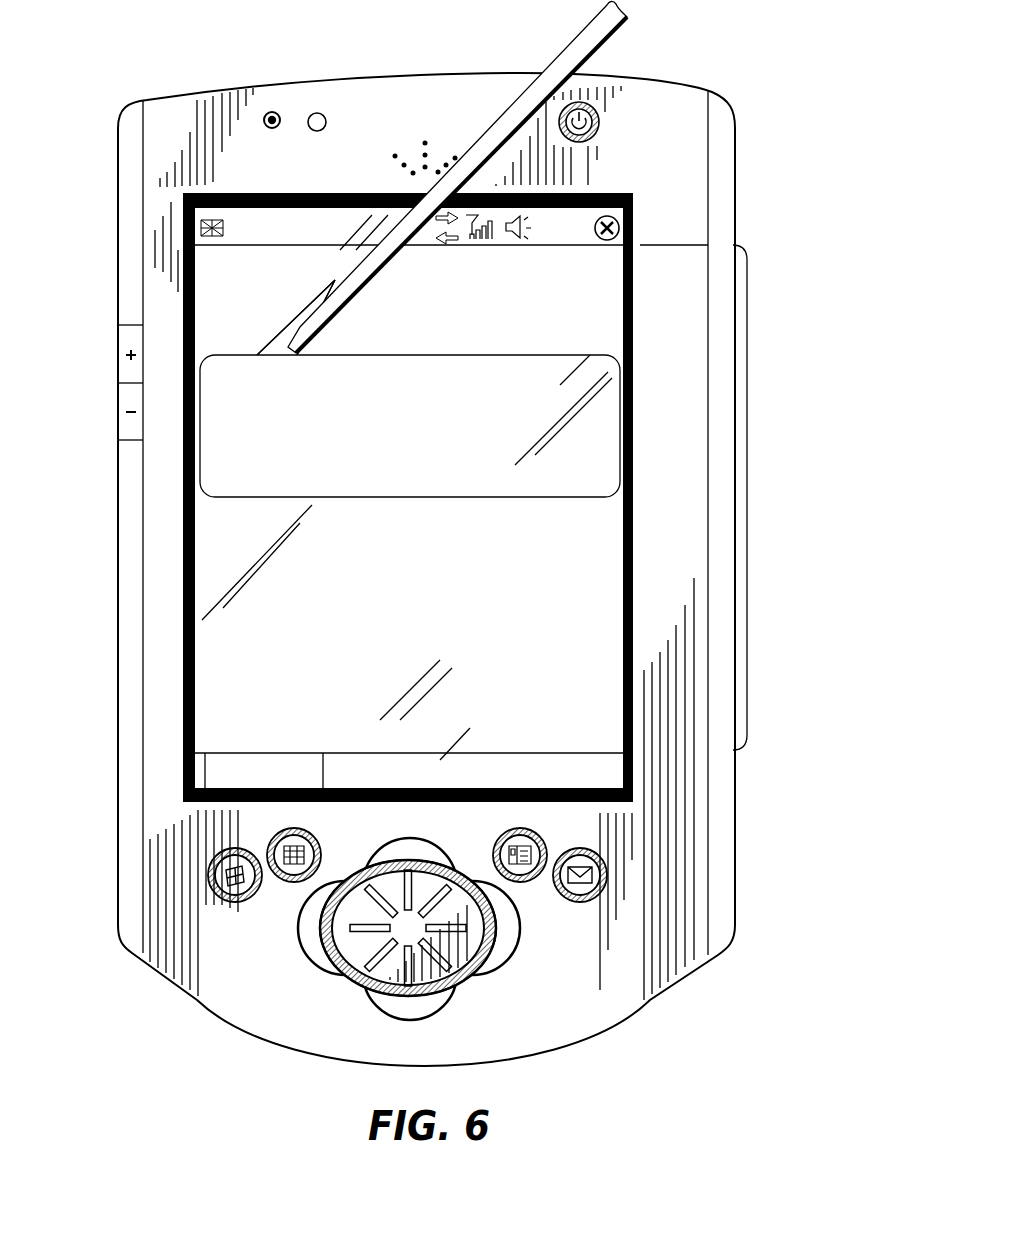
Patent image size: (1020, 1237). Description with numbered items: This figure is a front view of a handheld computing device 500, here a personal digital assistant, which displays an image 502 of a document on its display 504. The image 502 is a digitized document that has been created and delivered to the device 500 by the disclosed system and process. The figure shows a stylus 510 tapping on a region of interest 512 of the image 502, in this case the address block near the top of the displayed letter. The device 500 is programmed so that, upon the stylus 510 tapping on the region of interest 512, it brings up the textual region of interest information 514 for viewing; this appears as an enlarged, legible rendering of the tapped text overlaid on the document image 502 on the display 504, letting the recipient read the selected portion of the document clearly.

The handheld computing device 500 is at (664, 92).
The image 502 is at (749, 248).
The display 504 is at (215, 650).
The stylus 510 is at (563, 52).
The region of interest 512 is at (215, 301).
The textual region of interest information 514 is at (600, 442).